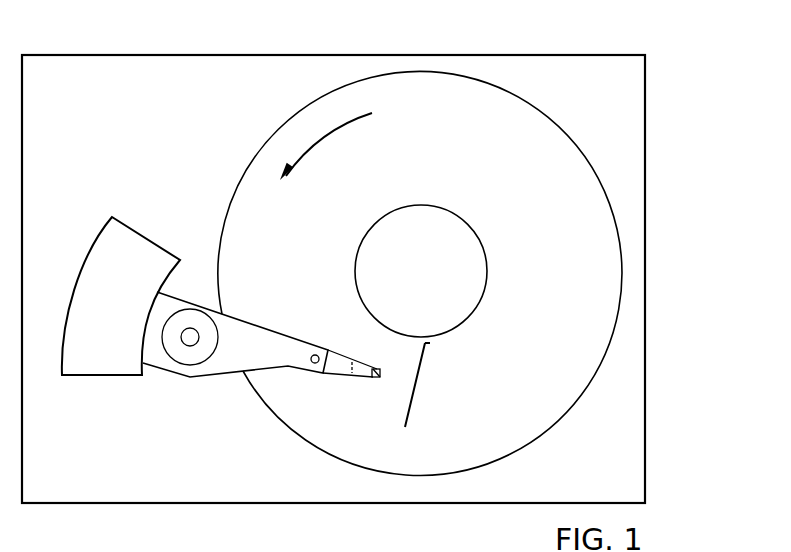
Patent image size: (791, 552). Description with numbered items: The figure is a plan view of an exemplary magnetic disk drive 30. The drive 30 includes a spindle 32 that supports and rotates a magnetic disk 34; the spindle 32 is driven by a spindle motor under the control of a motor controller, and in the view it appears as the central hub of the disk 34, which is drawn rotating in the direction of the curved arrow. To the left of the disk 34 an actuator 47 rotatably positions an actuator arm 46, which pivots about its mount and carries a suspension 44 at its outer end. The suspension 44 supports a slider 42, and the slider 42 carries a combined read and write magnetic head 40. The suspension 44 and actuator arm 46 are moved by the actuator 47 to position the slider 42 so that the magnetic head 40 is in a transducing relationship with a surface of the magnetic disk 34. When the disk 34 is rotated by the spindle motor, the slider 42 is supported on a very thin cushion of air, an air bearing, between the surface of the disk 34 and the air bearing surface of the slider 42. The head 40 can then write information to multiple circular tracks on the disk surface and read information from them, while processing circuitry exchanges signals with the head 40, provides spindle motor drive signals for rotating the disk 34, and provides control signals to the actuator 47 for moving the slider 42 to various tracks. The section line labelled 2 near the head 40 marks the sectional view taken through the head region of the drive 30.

The magnetic disk drive 30 is at (666, 90).
The spindle 32 is at (457, 216).
The magnetic disk 34 is at (567, 292).
The magnetic head 40 is at (380, 379).
The slider 42 is at (378, 368).
The suspension 44 is at (335, 378).
The actuator arm 46 is at (278, 333).
The actuator 47 is at (153, 243).
The section line 2- 2 is at (440, 354).